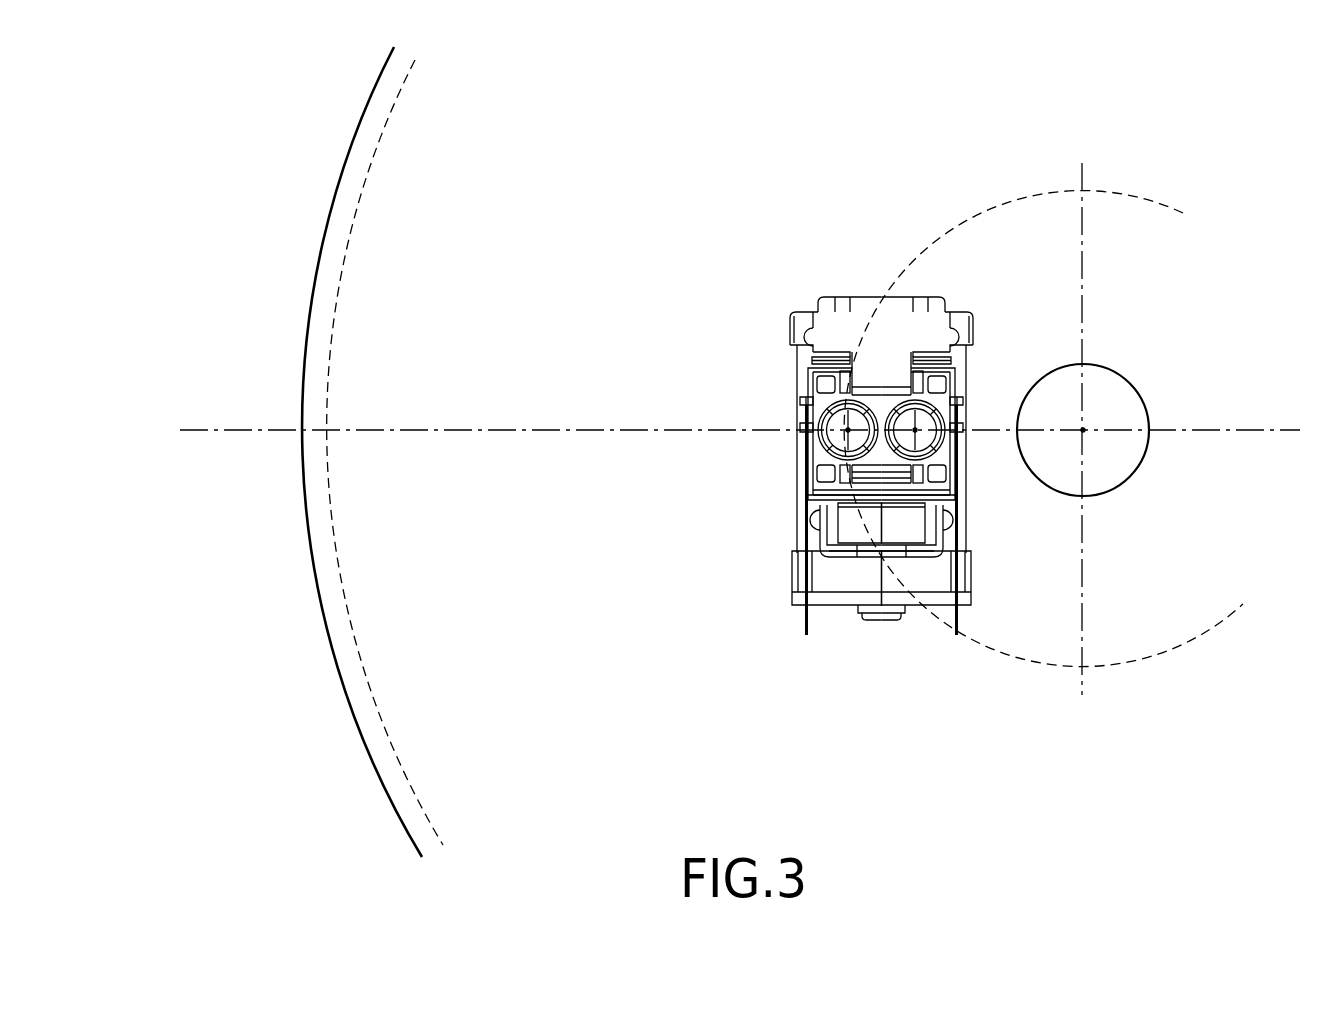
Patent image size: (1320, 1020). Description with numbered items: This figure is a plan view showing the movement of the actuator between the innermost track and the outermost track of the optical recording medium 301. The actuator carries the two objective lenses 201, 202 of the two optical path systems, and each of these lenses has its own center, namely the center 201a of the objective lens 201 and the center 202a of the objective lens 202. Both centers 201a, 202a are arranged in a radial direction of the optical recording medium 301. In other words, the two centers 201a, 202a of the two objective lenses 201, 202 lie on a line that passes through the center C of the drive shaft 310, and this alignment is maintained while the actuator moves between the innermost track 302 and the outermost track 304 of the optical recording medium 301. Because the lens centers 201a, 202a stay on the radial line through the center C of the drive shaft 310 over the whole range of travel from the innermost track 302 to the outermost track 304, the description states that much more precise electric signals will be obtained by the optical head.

The objective lens 201 is at (833, 418).
The center of objective lens 201a is at (838, 437).
The objective lens 202 is at (950, 417).
The center of objective lens 202a is at (930, 445).
The optical recording medium 301 is at (322, 632).
The innermost track 302 is at (1022, 660).
The outermost track 304 is at (373, 698).
The drive shaft 310 is at (1133, 372).
The center of drive shaft C is at (1090, 437).